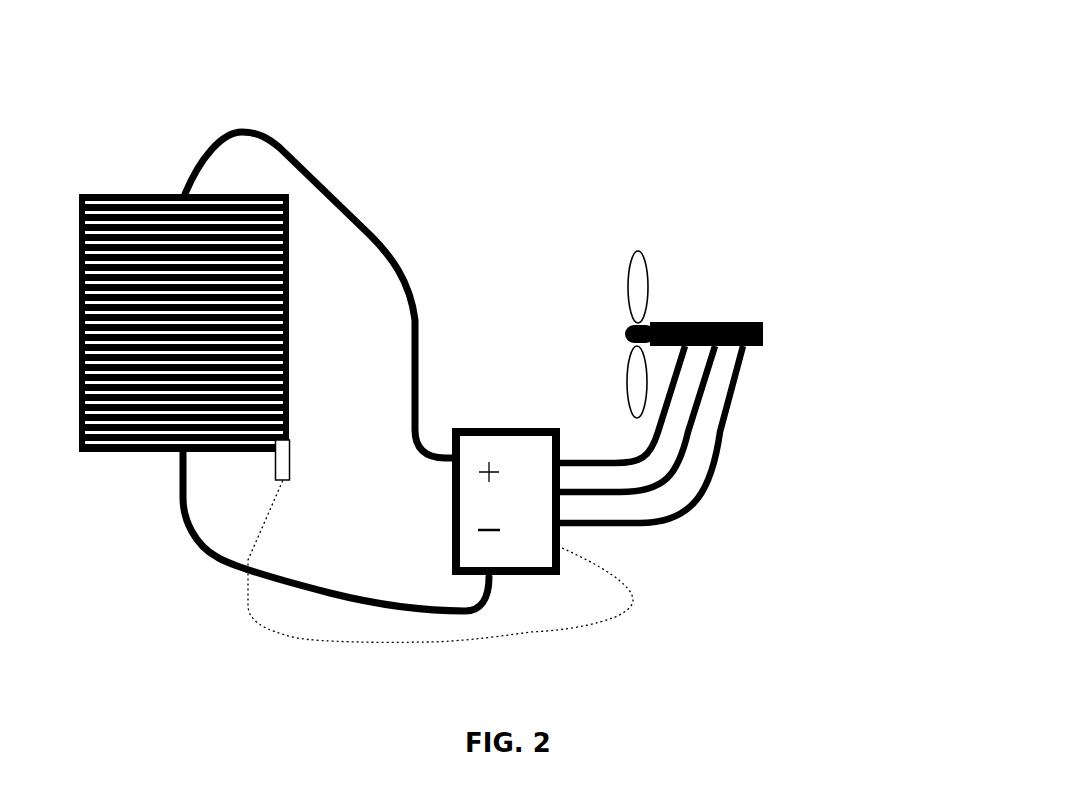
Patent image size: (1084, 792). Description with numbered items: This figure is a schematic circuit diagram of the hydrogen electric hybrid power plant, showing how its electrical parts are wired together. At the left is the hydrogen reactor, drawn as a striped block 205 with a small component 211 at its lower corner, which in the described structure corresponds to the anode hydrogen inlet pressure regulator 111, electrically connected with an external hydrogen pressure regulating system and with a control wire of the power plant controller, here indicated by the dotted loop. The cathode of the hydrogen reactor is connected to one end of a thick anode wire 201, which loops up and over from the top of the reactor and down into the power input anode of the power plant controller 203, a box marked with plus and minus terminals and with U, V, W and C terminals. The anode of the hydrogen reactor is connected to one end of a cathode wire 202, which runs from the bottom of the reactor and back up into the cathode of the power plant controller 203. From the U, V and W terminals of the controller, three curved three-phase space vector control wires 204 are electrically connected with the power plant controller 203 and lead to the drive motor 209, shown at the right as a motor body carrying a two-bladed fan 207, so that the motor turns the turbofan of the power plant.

The anode hydrogen inlet pressure regulator 111 is at (427, 640).
The anode wire 201 is at (382, 250).
The cathode wire 202 is at (177, 502).
The power plant controller 203 is at (537, 428).
The three-phase space vector control wire 204 is at (700, 500).
The radiator 205 is at (122, 188).
The fan blade 207 is at (653, 270).
The drive motor 209 is at (725, 307).
The temperature sensor 211 is at (293, 458).